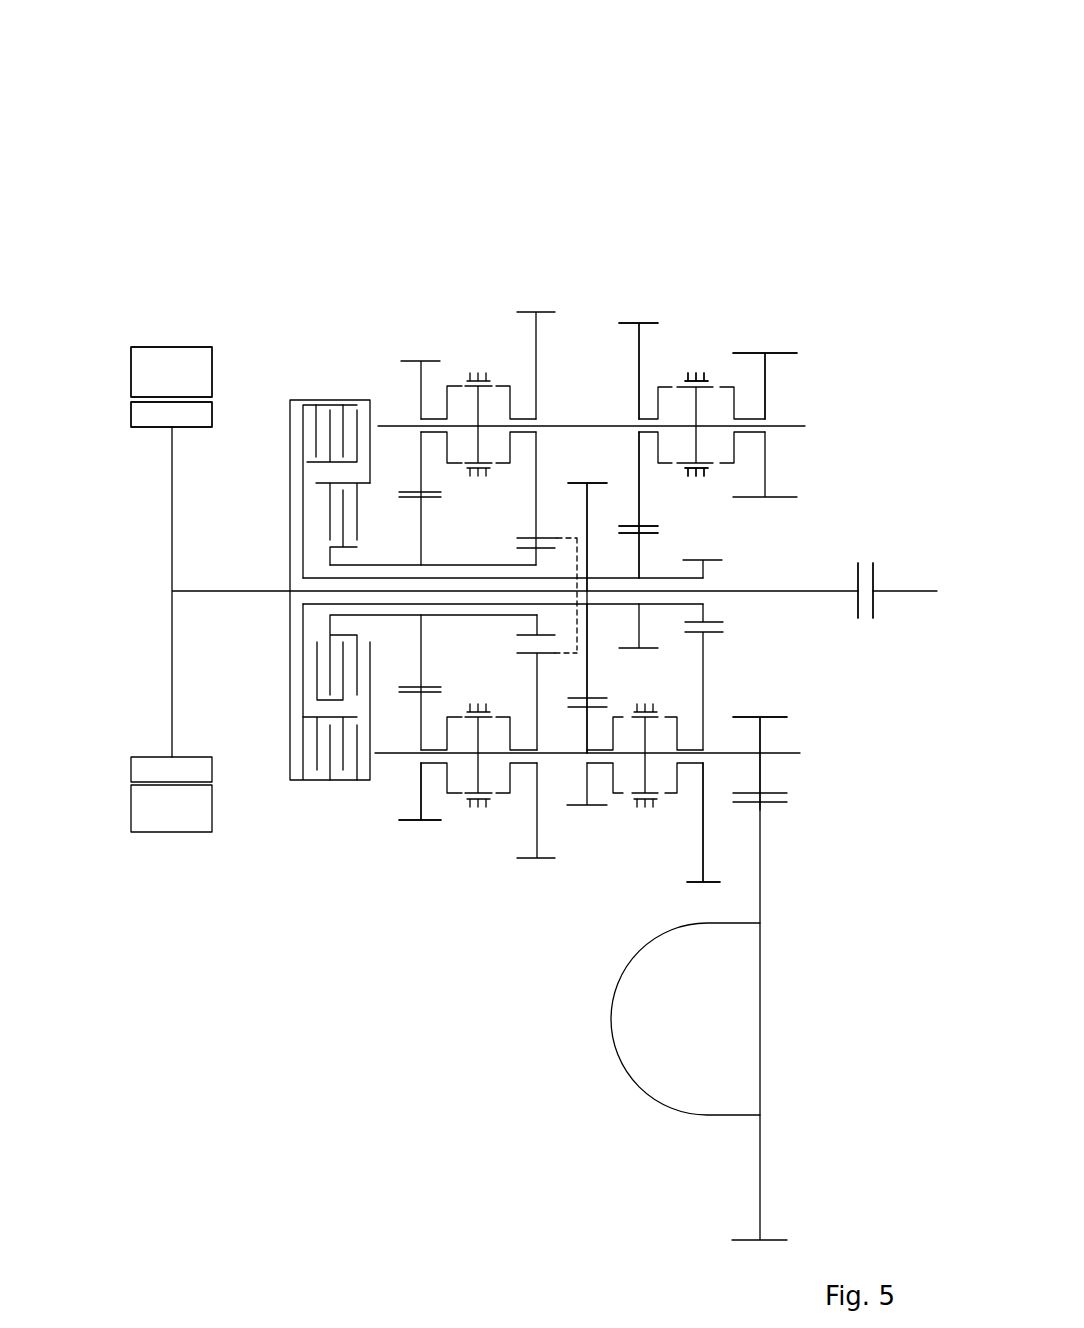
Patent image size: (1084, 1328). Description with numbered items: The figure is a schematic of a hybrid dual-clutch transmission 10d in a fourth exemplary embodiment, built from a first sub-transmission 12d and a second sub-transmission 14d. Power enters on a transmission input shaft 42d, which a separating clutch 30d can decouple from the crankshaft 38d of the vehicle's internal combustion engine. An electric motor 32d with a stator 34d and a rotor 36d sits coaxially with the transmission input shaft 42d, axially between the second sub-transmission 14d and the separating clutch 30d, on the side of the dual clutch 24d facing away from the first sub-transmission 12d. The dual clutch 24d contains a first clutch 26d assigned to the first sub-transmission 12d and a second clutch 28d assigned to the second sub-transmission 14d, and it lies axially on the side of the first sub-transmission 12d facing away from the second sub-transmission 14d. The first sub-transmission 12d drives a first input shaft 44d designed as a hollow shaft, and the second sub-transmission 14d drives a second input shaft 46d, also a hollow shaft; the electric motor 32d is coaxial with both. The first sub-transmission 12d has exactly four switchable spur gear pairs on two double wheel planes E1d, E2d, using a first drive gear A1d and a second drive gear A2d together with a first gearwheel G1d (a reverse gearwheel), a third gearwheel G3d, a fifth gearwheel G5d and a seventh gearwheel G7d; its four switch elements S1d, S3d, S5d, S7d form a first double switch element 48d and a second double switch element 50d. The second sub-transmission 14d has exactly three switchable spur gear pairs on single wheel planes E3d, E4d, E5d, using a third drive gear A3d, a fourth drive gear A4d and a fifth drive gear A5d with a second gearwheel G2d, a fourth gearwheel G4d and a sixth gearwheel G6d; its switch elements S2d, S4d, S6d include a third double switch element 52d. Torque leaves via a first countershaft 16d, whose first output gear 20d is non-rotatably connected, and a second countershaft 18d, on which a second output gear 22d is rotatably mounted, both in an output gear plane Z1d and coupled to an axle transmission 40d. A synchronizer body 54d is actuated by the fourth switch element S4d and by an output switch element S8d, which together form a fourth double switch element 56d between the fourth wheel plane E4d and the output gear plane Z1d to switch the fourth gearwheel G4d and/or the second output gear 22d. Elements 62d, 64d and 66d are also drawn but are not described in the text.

The hybrid dual-clutch transmission 10d is at (912, 133).
The first sub-transmission 12d is at (478, 176).
The second sub-transmission 14d is at (695, 168).
The first countershaft 16d is at (782, 752).
The second countershaft 18d is at (780, 422).
The first output gear 20d is at (785, 790).
The second output gear 22d is at (772, 380).
The dual clutch 24d is at (330, 393).
The first clutch 26d is at (288, 431).
The second clutch 28d is at (310, 521).
The separating clutch 30d is at (866, 620).
The electric motor 32d is at (175, 335).
The stator 34d is at (175, 375).
The rotor 36d is at (165, 410).
The crankshaft 38d is at (912, 589).
The axle transmission 40d is at (765, 1020).
The transmission input shaft 42d is at (200, 600).
The first input shaft 44d is at (690, 585).
The second input shaft 46d is at (375, 565).
The first double switch element 48d is at (478, 814).
The second double switch element 50d is at (478, 370).
The third double switch element 52d is at (645, 812).
The synchronizer body 54d is at (690, 410).
The fourth double switch element 56d is at (699, 370).
The shift sleeve 62d is at (718, 477).
The gear 64d is at (678, 476).
The differential 66d is at (763, 898).
The first drive gear A1d is at (535, 618).
The second drive gear A2d is at (537, 655).
The third drive gear A3d is at (602, 500).
The fourth drive gear A4d is at (642, 545).
The fifth drive gear A5d is at (707, 608).
The first wheel plane E1d is at (421, 830).
The second wheel plane E2d is at (536, 867).
The third wheel plane E3d is at (587, 814).
The fourth wheel plane E4d is at (640, 316).
The fifth wheel plane E5d is at (702, 902).
The first gearwheel G1d is at (405, 775).
The second gearwheel G2d is at (705, 857).
The third gearwheel G3d is at (533, 345).
The fourth gearwheel G4d is at (636, 357).
The fifth gearwheel G5d is at (408, 806).
The sixth gearwheel G6d is at (588, 773).
The seventh gearwheel G7d is at (405, 372).
The first switch element S1d is at (505, 802).
The second switch element S2d is at (672, 802).
The third switch element S3d is at (503, 378).
The fourth switch element S4d is at (663, 378).
The fifth switch element S5d is at (452, 802).
The sixth switch element S6d is at (613, 802).
The seventh switch element S7d is at (455, 378).
The output switch element S8d is at (727, 378).
The output gear plane Z1d is at (766, 346).